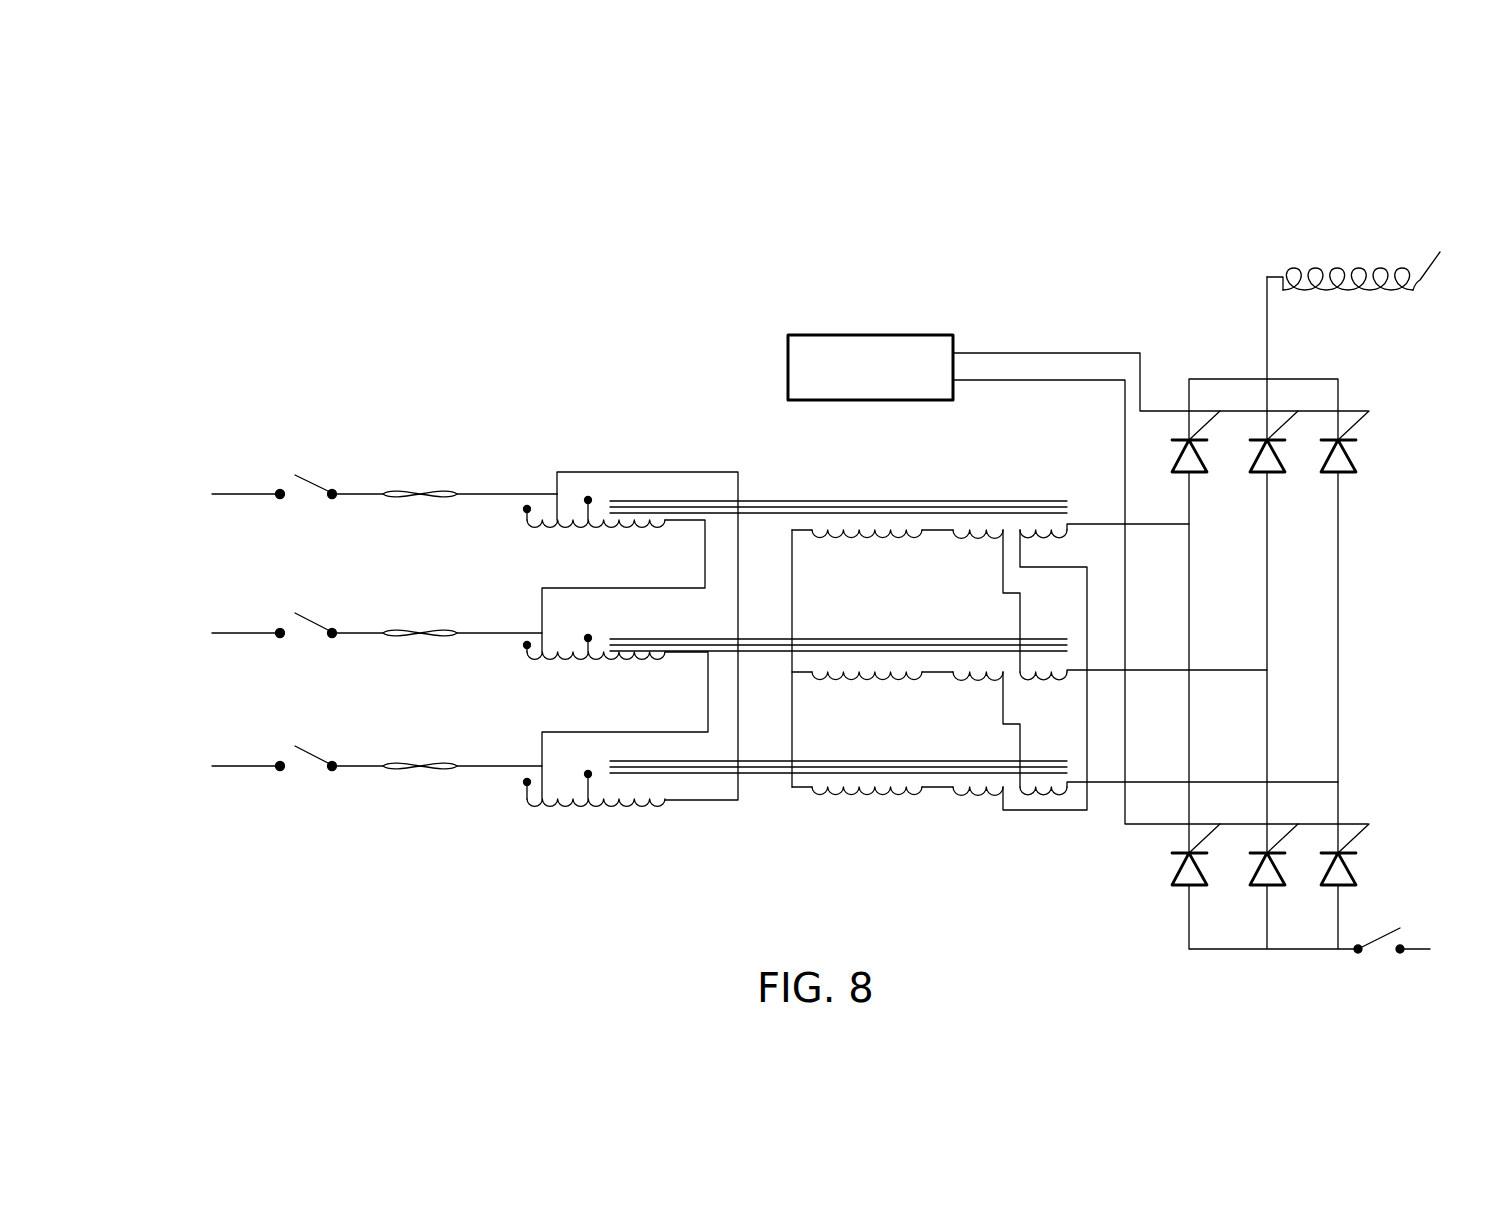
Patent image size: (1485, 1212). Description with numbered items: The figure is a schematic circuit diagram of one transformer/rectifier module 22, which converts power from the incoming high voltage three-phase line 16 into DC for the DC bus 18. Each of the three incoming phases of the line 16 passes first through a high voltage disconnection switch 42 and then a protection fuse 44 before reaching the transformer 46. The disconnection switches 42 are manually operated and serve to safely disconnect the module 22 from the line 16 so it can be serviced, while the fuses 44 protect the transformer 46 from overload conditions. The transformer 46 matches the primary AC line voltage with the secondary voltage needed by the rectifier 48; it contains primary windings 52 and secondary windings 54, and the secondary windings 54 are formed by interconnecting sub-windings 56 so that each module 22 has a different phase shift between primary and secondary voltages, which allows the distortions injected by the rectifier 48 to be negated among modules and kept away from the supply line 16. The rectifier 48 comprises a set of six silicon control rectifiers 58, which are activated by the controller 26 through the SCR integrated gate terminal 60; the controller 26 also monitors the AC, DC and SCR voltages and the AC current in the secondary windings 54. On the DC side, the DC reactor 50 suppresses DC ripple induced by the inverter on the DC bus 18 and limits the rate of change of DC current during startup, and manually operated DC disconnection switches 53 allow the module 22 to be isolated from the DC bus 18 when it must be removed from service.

The high voltage three-phase line 16 is at (213, 477).
The DC bus 18 is at (1447, 280).
The transformer/rectifier module 22 is at (697, 326).
The controller 26 is at (870, 367).
The high voltage disconnection switches 42 is at (314, 487).
The protection fuses 44 is at (435, 500).
The transformer 46 is at (766, 803).
The rectifier 48 is at (1281, 962).
The DC reactor 50 is at (1356, 263).
The primary windings 52 is at (610, 538).
The DC disconnection switches 53 is at (1428, 264).
The secondary windings 54 is at (878, 538).
The sub-windings 56 is at (1065, 827).
The silicon control rectifiers 58 is at (1352, 463).
The SCR integrated gate terminal 60 is at (958, 347).